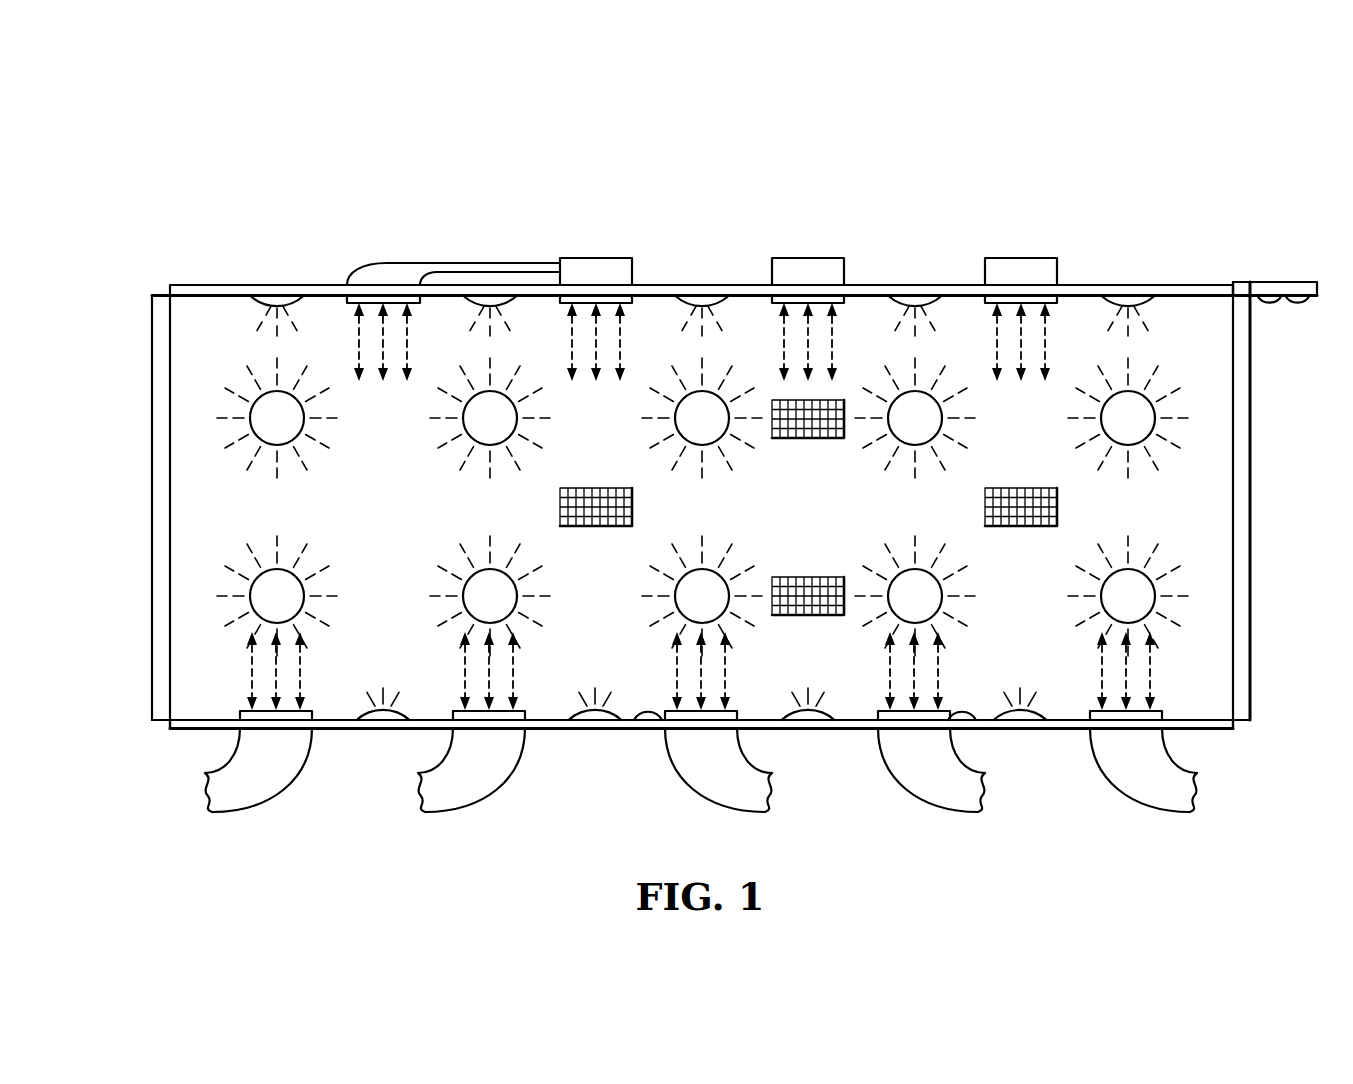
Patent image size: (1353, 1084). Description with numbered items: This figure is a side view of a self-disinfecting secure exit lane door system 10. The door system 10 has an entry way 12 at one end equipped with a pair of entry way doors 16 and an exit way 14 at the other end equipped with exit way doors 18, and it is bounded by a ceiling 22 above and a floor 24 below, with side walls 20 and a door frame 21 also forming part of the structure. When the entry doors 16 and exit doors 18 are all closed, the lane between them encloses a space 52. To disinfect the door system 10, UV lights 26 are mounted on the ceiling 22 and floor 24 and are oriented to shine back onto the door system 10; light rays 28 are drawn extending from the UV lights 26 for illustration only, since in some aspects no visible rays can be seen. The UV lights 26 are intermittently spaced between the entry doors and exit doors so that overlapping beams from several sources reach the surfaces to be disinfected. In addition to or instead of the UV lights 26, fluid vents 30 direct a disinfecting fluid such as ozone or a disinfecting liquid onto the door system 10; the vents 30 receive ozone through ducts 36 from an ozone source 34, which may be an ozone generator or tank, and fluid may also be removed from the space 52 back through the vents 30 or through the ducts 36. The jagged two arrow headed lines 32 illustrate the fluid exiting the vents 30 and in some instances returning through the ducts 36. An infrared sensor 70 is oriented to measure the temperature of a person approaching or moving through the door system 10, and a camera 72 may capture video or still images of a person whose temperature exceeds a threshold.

The door system 10 is at (437, 147).
The entry way 12 is at (1297, 423).
The exit way 14 is at (104, 386).
The entry way doors 16 is at (1252, 500).
The exit way doors 18 is at (153, 503).
The side walls 20 is at (1182, 491).
The door frame 21 is at (165, 729).
The ceiling 22 is at (1188, 284).
The floor 24 is at (1222, 730).
The UV lights 26 is at (298, 304).
The light rays 28 is at (258, 322).
The fluid vents 30 is at (840, 304).
The jagged two arrow headed lines 32 is at (525, 680).
The ozone source 34 is at (590, 258).
The ducts 36 is at (386, 262).
The space 52 is at (580, 581).
The infrared sensor 70 is at (1268, 306).
The camera 72 is at (1298, 306).